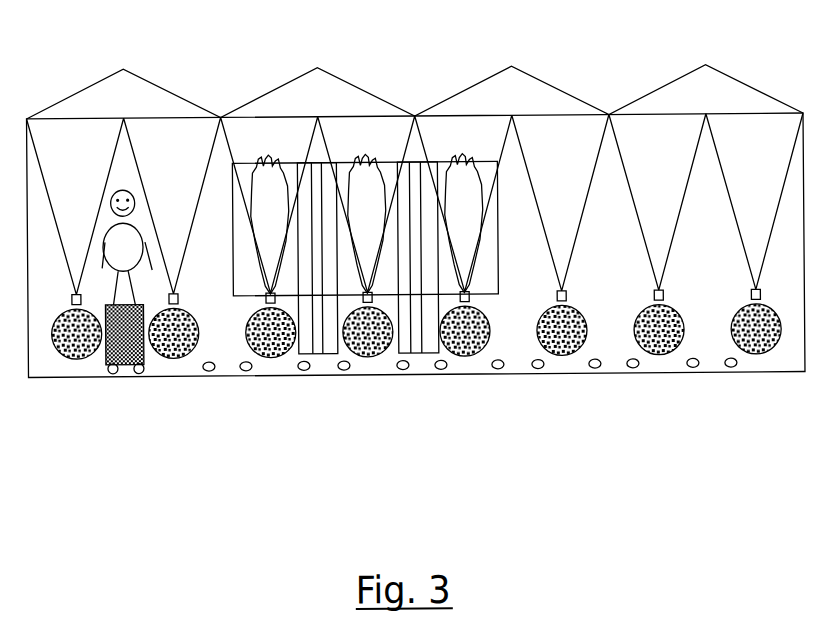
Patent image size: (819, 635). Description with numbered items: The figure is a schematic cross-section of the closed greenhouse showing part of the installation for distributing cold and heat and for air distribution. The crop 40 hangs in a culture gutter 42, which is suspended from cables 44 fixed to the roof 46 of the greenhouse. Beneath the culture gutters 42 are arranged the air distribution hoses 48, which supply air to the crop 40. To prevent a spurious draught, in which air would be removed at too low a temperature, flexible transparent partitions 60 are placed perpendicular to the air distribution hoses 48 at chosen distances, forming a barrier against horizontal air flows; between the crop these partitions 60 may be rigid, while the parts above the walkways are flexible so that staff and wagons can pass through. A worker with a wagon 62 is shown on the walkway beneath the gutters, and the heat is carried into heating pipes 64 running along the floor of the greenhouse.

The crop 40 is at (463, 187).
The culture gutter 42 is at (467, 438).
The cables 44 is at (316, 133).
The roof 46 is at (65, 105).
The air distribution hoses 48 is at (568, 341).
The flexible transparent partitions 60 is at (413, 342).
The worker with cart 62 is at (133, 340).
The heating pipes 64 is at (692, 369).